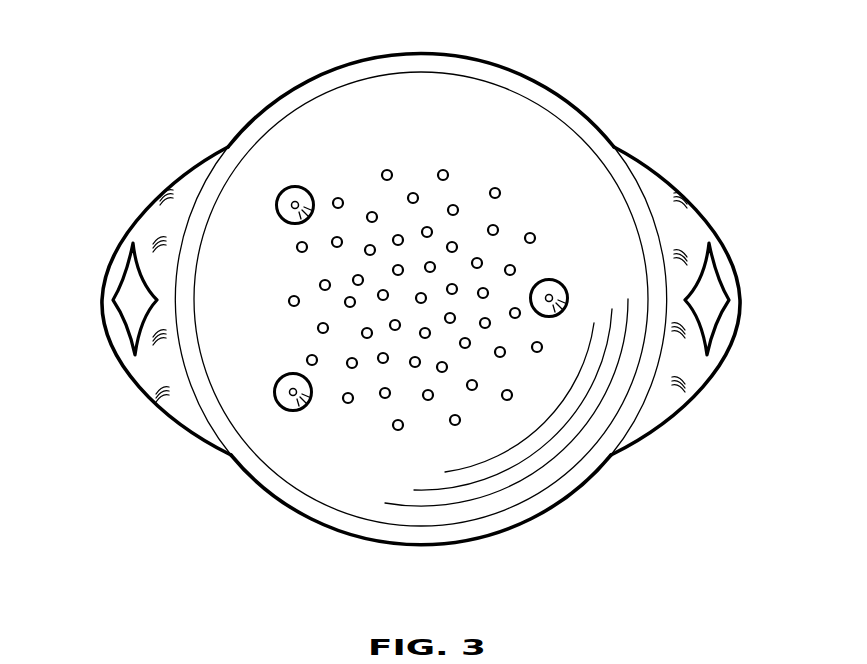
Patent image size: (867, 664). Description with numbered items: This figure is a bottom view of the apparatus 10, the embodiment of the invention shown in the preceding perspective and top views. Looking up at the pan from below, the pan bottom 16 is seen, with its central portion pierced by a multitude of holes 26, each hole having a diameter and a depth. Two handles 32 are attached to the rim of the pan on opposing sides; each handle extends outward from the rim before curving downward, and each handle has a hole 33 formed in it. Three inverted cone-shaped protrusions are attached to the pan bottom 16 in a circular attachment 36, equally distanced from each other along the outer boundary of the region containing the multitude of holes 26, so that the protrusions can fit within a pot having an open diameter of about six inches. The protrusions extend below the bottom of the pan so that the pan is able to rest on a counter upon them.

The apparatus 10 is at (193, 92).
The bottom 16 is at (480, 445).
The holes 26 is at (497, 188).
The handles 32 is at (697, 230).
The hole 33 is at (712, 292).
The large openings 36 is at (309, 192).